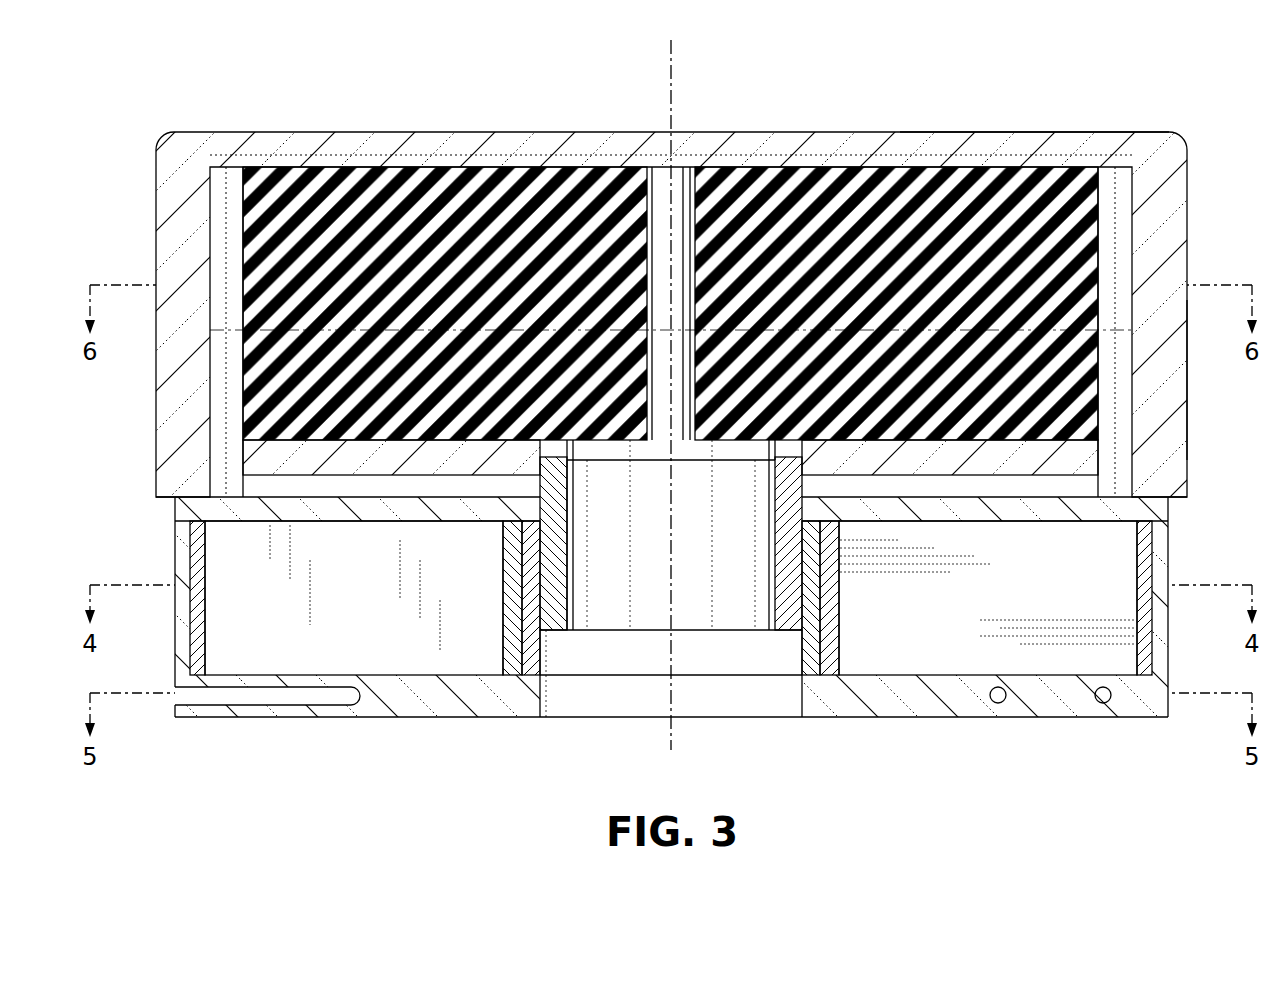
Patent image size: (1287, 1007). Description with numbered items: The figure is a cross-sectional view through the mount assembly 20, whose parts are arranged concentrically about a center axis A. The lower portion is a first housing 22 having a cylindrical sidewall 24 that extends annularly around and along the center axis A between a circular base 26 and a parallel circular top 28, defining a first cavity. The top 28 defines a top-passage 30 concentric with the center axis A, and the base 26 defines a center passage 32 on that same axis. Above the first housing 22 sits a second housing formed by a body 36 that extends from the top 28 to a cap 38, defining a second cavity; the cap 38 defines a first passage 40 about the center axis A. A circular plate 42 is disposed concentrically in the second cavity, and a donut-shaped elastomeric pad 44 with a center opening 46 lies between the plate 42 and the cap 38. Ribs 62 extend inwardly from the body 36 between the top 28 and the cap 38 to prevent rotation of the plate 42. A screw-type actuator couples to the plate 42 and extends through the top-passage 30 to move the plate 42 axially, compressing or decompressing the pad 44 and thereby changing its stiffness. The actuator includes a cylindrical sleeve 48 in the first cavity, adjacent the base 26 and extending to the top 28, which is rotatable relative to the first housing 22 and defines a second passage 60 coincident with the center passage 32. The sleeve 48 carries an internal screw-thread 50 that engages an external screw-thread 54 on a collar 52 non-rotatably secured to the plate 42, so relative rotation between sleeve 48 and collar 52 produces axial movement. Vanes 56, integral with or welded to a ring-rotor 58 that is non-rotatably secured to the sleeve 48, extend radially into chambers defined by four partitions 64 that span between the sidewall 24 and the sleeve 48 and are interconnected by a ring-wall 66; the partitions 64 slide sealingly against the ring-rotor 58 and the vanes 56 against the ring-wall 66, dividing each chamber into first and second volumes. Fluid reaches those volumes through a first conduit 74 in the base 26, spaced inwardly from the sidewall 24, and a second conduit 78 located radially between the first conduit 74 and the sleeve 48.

The mount assembly 20 is at (998, 82).
The first housing 22 is at (1180, 622).
The sidewall 24 is at (1196, 422).
The base 26 is at (1170, 714).
The top 28 is at (1158, 509).
The top-passage 30 is at (540, 560).
The center passage 32 is at (546, 702).
The body 36 is at (1180, 372).
The cap 38 is at (1107, 148).
The first passage 40 is at (868, 158).
The plate 42 is at (1097, 283).
The pad 44 is at (1060, 238).
The center opening 46 is at (690, 188).
The sleeve 48 is at (812, 666).
The internal screw-thread 50 is at (800, 582).
The collar 52 is at (555, 572).
The external screw-thread 54 is at (563, 567).
The vanes 56 is at (988, 598).
The ring-rotor 58 is at (520, 530).
The second passage 60 is at (790, 617).
The ribs 62 is at (232, 413).
The partitions 64 is at (354, 598).
The ring-wall 66 is at (192, 562).
The first conduit 74 is at (1103, 704).
The second conduit 78 is at (998, 704).
The center axis A is at (676, 50).